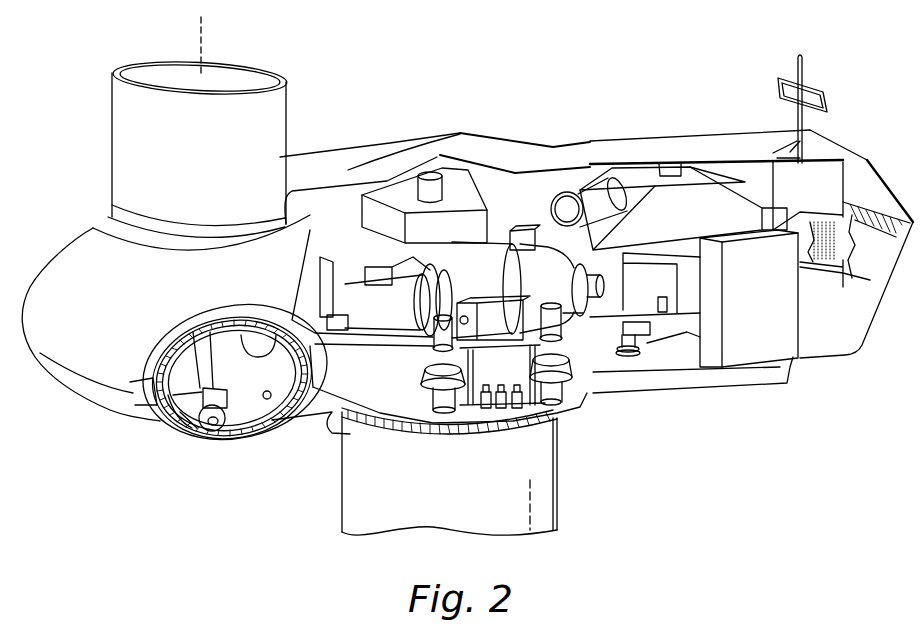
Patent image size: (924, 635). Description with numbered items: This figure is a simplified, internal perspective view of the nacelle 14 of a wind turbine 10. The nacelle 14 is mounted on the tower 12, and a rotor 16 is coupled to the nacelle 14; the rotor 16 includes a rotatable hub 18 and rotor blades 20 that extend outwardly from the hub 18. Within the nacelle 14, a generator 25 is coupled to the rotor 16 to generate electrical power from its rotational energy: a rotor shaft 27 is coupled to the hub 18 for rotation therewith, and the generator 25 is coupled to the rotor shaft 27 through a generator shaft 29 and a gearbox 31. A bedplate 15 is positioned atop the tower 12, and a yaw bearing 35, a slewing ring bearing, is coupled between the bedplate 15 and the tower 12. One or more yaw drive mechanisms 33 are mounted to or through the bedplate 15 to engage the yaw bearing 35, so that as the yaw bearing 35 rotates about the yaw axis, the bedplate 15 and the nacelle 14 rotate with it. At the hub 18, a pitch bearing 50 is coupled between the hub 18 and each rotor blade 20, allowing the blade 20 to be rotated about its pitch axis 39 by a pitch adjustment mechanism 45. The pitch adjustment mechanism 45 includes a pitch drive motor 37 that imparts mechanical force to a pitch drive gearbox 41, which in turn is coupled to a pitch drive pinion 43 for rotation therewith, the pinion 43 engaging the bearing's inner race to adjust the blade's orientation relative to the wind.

The wind turbine 10 is at (666, 93).
The tower 12 is at (335, 495).
The nacelle 14 is at (372, 145).
The bedplate 15 is at (309, 424).
The rotor 16 is at (52, 251).
The hub 18 is at (63, 343).
The rotor blade 20 is at (125, 133).
The generator 25 is at (657, 213).
The rotor shaft 27 is at (370, 300).
The generator shaft 29 is at (607, 290).
The gearbox 31 is at (507, 273).
The yaw drive mechanism 33 is at (439, 380).
The yaw bearing 35 is at (503, 427).
The pitch drive motor 37 is at (160, 380).
The pitch axis 39 is at (201, 28).
The pitch drive gearbox 41 is at (207, 383).
The pitch drive pinion 43 is at (198, 414).
The pitch adjustment mechanism 45 is at (170, 427).
The pitch bearing 50 is at (116, 217).